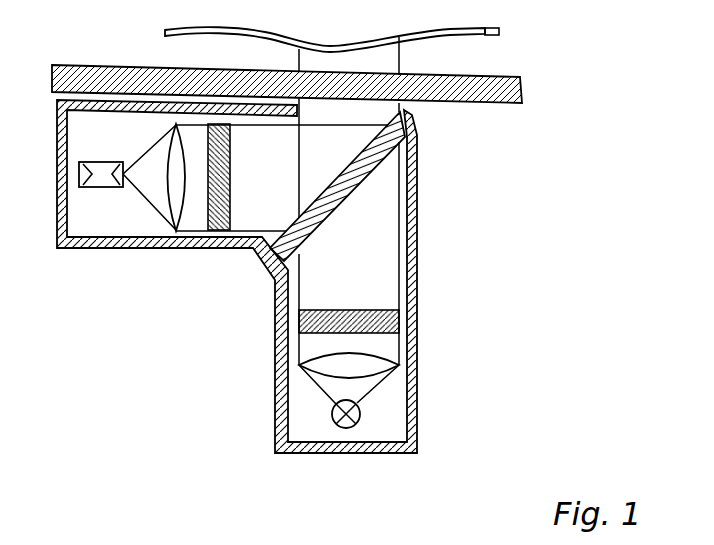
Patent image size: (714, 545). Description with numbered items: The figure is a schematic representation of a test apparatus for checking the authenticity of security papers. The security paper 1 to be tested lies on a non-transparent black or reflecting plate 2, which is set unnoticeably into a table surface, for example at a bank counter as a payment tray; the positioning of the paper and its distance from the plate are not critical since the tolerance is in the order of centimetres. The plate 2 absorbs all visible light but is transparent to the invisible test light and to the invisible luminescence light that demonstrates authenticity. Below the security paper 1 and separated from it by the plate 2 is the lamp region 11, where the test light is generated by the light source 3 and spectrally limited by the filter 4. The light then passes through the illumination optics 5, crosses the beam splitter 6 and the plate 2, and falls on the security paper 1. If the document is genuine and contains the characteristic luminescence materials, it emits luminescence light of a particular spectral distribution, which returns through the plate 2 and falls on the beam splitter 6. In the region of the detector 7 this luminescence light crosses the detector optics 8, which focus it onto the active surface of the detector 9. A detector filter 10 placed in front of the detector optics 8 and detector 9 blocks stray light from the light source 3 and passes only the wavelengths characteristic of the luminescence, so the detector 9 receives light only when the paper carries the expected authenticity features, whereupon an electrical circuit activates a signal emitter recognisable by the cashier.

The security paper 1 is at (499, 33).
The non-transparent plate 2 is at (526, 93).
The light source 3 is at (355, 414).
The filter 4 is at (380, 320).
The illumination optics 5 is at (375, 366).
The beam splitter 6 is at (393, 137).
The detector region 7 is at (139, 220).
The detector optics 8 is at (176, 193).
The detector 9 is at (102, 174).
The detector filter 10 is at (218, 198).
The lamp region 11 is at (387, 438).